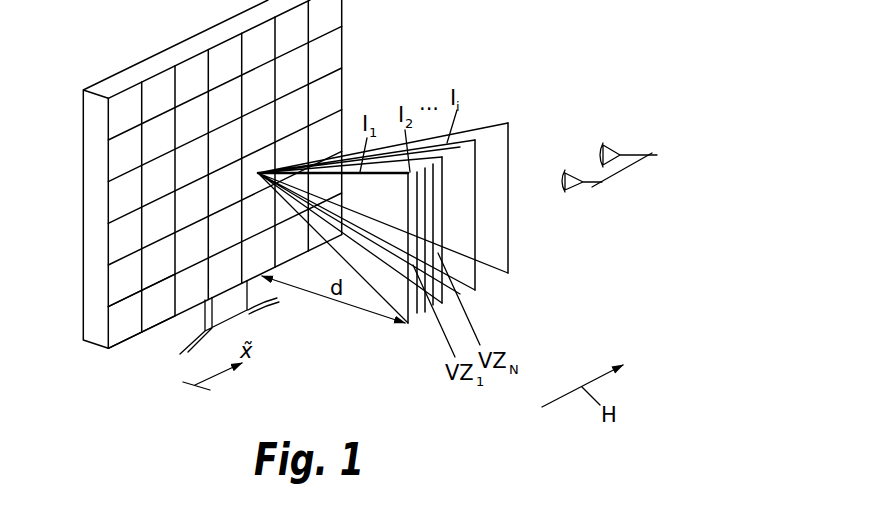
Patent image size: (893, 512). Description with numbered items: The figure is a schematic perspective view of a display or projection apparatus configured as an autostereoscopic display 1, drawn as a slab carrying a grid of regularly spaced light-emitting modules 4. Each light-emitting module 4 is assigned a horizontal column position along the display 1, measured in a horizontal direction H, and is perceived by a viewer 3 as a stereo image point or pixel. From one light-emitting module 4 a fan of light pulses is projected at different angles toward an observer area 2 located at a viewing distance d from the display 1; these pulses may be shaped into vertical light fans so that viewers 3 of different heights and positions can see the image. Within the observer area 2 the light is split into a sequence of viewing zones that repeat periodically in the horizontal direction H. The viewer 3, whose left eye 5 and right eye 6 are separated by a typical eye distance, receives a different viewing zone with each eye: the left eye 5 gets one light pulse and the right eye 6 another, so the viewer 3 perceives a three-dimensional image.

The autostereoscopic display 1 is at (95, 343).
The observer area 2 is at (528, 125).
The viewer 3 is at (598, 185).
The light-emitting module 4 is at (162, 307).
The left eye 5 is at (590, 187).
The right eye 6 is at (623, 153).